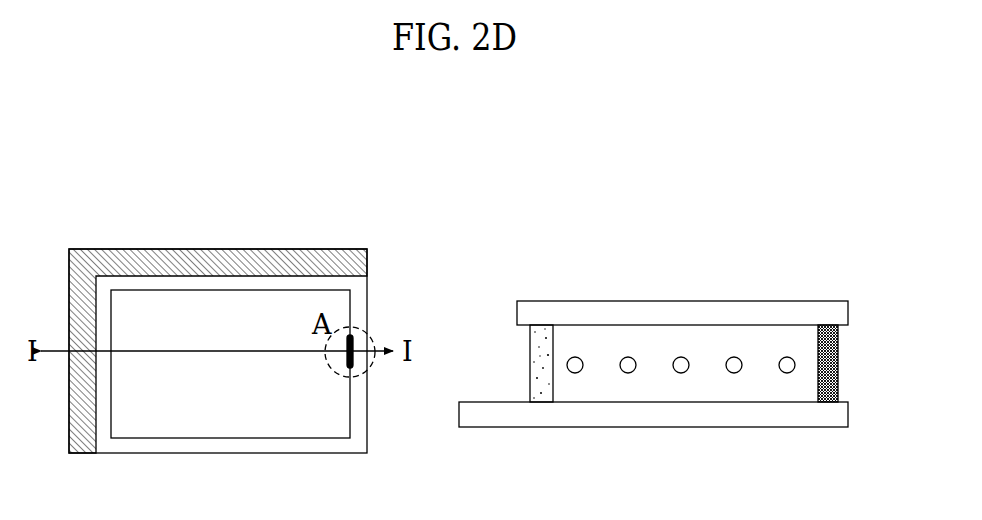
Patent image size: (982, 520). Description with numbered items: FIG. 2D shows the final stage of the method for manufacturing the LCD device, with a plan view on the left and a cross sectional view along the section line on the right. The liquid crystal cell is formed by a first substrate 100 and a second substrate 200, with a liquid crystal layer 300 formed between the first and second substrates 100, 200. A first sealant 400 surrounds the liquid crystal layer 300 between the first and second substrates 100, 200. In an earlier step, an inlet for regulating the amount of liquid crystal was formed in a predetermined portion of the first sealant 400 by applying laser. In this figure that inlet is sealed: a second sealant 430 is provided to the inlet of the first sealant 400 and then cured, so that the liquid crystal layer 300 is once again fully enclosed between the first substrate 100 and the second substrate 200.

The first substrate 100 is at (287, 262).
The second substrate 200 is at (200, 249).
The liquid crystal layer 300 is at (683, 373).
The first sealant 400 is at (228, 438).
The second sealant 430 is at (352, 362).